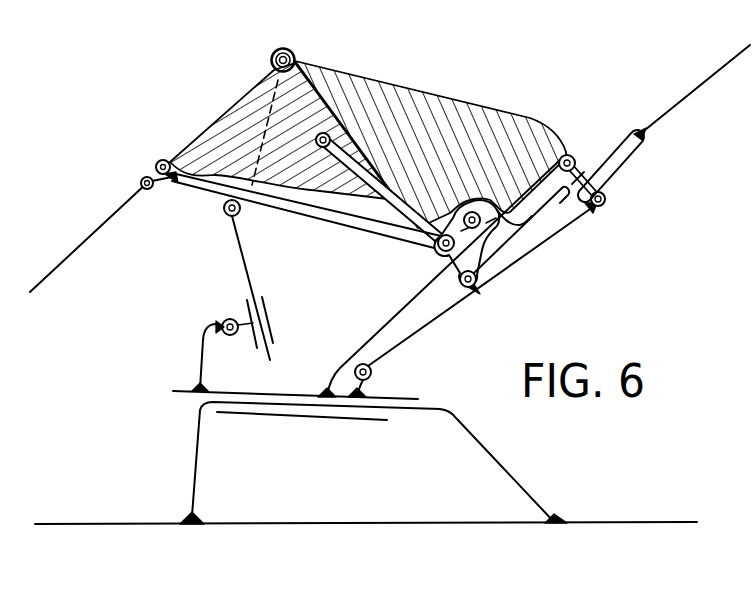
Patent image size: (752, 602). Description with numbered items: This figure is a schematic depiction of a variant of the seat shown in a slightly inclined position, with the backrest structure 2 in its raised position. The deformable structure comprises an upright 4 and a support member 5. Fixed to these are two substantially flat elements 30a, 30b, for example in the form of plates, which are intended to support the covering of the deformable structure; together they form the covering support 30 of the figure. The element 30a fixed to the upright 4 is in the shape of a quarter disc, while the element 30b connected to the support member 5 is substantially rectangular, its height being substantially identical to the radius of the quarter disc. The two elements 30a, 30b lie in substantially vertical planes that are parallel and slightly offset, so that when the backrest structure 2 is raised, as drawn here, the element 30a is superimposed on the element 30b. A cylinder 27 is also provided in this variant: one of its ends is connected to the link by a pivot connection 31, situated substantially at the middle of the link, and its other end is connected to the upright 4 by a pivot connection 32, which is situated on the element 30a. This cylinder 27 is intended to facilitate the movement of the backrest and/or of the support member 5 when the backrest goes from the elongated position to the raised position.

The backrest structure 2 is at (698, 88).
The upright 4 is at (238, 106).
The support member 5 is at (470, 118).
The cylinder 27 is at (398, 193).
The linkage 30 is at (215, 135).
The substantially flat element 30a is at (167, 160).
The substantially flat element 30b is at (522, 142).
The pivot connection 31 is at (478, 284).
The pivot connection 32 is at (319, 136).